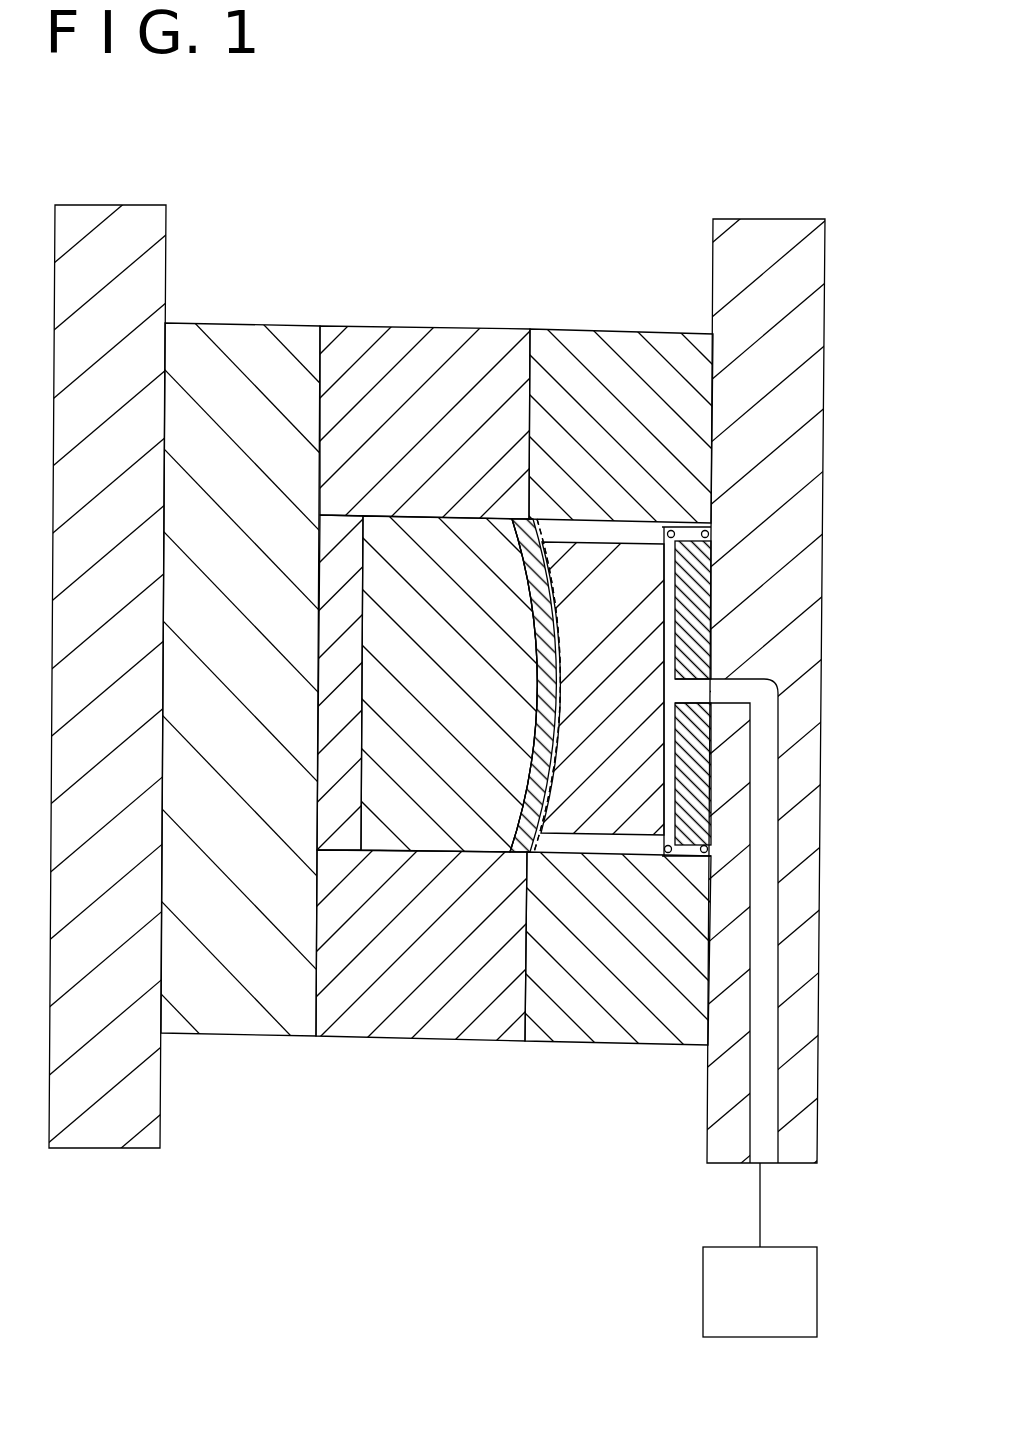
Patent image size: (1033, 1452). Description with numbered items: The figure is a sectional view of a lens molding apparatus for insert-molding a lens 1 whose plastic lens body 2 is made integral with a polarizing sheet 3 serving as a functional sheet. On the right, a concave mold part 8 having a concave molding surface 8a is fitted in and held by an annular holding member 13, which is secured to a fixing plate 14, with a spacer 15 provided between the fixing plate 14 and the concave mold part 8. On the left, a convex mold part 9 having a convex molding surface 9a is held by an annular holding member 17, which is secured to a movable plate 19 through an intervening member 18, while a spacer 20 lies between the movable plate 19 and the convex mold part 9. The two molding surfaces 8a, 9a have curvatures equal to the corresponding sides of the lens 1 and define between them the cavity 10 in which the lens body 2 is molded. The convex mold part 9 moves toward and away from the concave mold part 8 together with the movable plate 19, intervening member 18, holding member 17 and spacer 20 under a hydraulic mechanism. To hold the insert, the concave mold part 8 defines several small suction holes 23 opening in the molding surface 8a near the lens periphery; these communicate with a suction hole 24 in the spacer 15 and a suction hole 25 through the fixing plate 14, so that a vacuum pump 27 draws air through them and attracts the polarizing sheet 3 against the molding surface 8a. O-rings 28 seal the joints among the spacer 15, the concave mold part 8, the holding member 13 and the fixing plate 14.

The lens 1 is at (557, 611).
The lens body 2 is at (533, 713).
The polarizing sheet 3 is at (700, 545).
The concave mold part 8 is at (632, 625).
The concave molding surface 8a is at (559, 671).
The convex mold part 9 is at (438, 540).
The convex molding surface 9a is at (529, 630).
The cavity 10 is at (516, 812).
The annular holding member 13 is at (598, 350).
The fixing plate 14 is at (802, 441).
The spacer 15 is at (693, 767).
The annular holding member 17 is at (427, 340).
The intervening member 18 is at (234, 352).
The movable plate 19 is at (57, 1053).
The spacer 20 is at (334, 776).
The suction holes 23 is at (610, 532).
The suction hole 24 is at (672, 787).
The suction hole 25 is at (770, 975).
The vacuum pump 27 is at (723, 1284).
The O-rings 28 is at (704, 528).